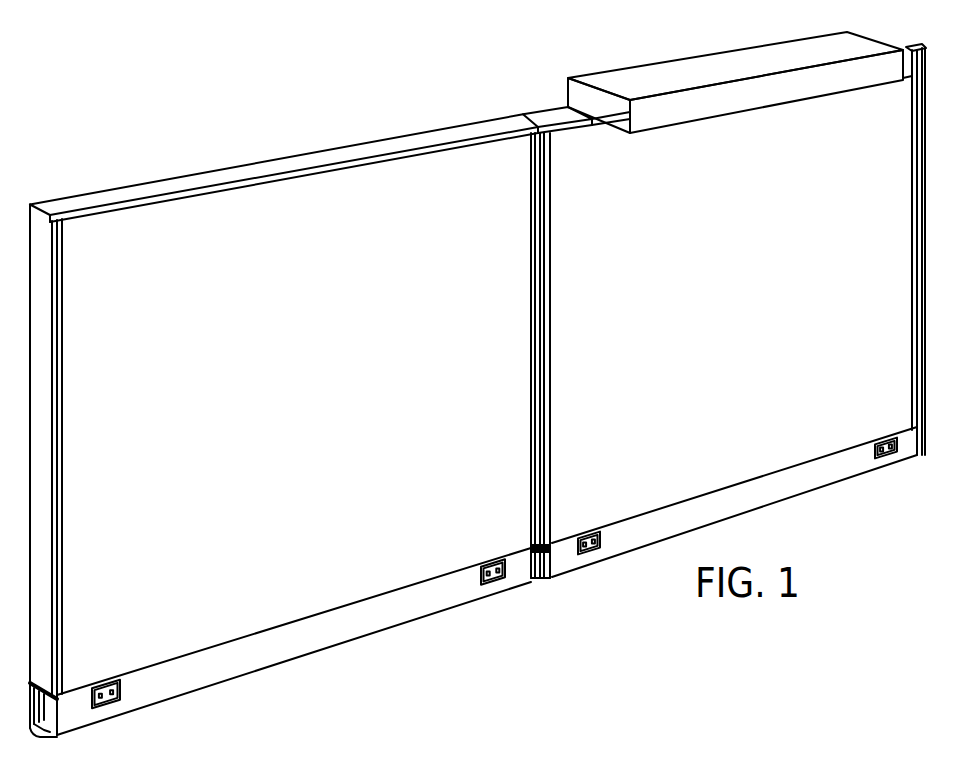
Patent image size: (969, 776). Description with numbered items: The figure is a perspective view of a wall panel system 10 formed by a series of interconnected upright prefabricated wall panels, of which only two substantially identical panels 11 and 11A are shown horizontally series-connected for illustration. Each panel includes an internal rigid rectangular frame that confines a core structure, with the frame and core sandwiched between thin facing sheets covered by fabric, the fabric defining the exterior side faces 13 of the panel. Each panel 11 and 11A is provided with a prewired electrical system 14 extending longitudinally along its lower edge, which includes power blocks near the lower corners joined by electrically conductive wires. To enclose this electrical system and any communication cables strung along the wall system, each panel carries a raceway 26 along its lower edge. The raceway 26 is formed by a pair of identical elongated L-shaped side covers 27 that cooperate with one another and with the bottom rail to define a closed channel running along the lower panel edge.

The wall panel system 10 is at (349, 98).
The wall panel 11 is at (555, 101).
The wall panel 11A is at (248, 159).
The exterior side faces 13 is at (764, 347).
The prewired electrical system 14 is at (667, 549).
The raceway 26 is at (842, 482).
The L-shaped side covers 27 is at (758, 494).